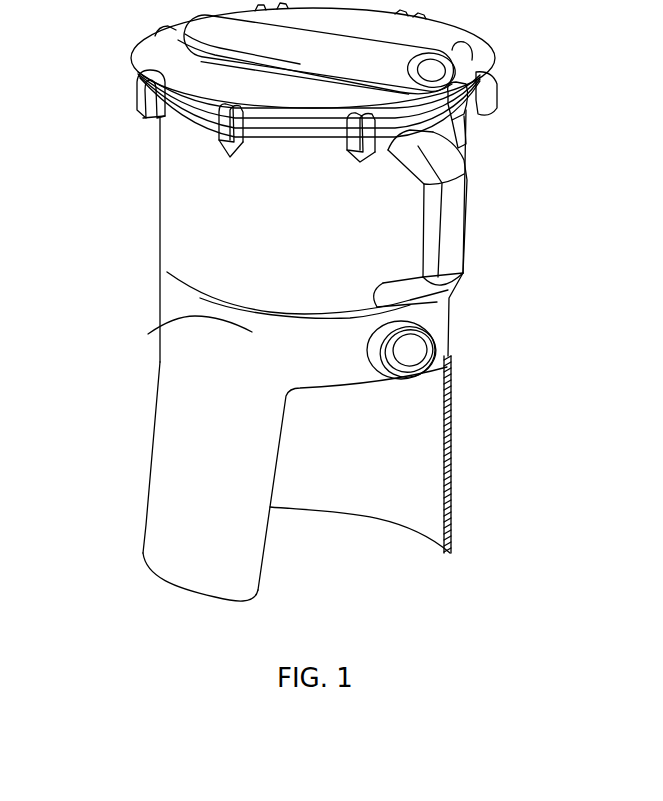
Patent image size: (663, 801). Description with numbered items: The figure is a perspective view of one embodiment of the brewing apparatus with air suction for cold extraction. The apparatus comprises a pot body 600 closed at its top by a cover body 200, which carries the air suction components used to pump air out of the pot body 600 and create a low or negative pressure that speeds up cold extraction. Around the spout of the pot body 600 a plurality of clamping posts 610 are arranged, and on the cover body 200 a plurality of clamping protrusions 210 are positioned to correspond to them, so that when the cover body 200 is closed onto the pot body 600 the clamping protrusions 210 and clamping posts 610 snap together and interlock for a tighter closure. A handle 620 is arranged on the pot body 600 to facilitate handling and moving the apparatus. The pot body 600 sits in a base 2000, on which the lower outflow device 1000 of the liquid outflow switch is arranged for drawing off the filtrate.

The cover body 200 is at (451, 52).
The clamping protrusions 210 is at (497, 93).
The pot body 600 is at (180, 262).
The clamping posts 610 is at (147, 103).
The handle 620 is at (467, 180).
The lower outflow device 1000 is at (408, 354).
The base 2000 is at (250, 332).